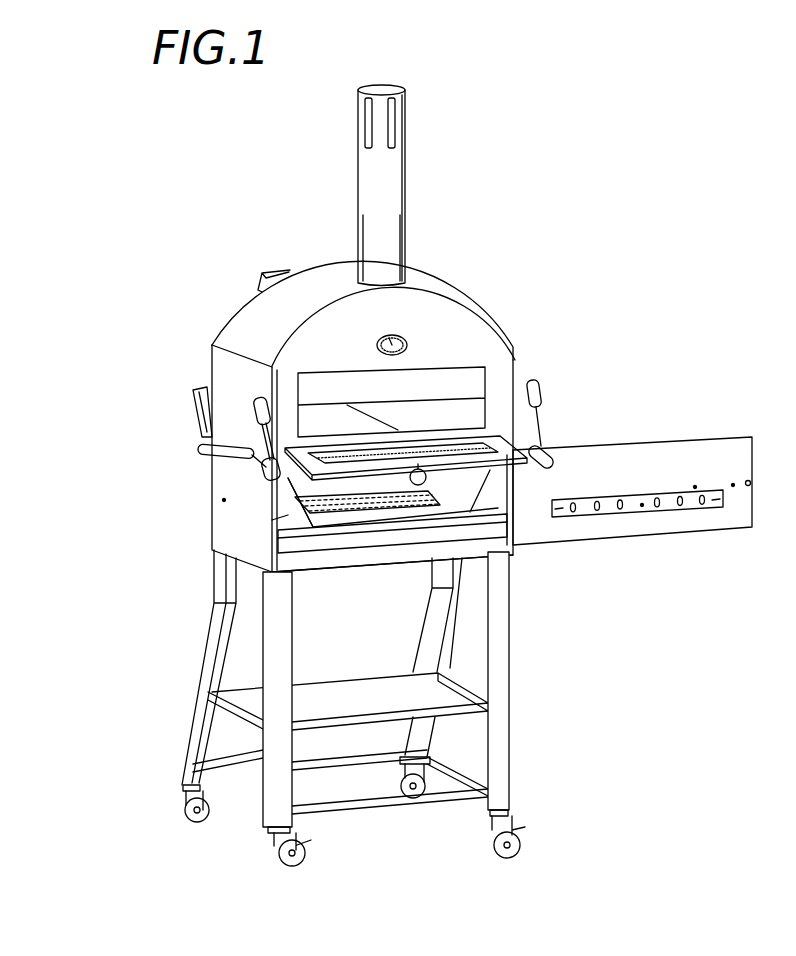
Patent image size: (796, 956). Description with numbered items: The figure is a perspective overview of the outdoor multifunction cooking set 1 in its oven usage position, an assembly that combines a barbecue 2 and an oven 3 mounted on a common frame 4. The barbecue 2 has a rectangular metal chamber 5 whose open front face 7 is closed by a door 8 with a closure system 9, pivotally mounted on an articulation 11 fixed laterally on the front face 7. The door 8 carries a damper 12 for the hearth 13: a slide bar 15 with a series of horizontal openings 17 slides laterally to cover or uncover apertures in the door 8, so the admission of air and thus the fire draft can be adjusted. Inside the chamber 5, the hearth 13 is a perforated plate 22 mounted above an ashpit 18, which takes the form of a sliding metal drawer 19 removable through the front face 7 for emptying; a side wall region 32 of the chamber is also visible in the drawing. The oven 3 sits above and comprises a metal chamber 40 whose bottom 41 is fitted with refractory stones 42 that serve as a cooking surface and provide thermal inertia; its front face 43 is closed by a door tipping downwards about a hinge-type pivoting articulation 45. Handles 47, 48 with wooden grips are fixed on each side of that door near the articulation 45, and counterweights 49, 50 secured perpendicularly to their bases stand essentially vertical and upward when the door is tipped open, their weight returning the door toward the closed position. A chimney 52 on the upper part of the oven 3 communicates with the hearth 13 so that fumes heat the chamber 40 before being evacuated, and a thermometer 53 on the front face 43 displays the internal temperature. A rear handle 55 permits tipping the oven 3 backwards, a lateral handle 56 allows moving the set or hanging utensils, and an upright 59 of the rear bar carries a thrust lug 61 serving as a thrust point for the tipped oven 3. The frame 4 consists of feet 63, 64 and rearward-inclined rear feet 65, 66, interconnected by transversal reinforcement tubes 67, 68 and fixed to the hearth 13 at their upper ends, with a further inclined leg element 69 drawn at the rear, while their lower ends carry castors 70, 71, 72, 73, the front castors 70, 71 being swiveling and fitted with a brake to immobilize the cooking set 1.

The multifunction cooking set 1 is at (542, 152).
The barbecue 2 is at (197, 492).
The oven 3 is at (512, 297).
The frame 4 is at (557, 652).
The chamber 5 is at (232, 521).
The front face 7 is at (490, 503).
The door 8 is at (650, 455).
The closure system 9 is at (752, 483).
The articulation 11 is at (517, 500).
The damper 12 is at (720, 515).
The hearth 13 is at (263, 523).
The slide bar 15 is at (635, 507).
The horizontal openings 17 is at (600, 500).
The ashpit 18 is at (420, 545).
The metal drawer 19 is at (392, 530).
The perforated plate 22 is at (280, 517).
The side wall 32 is at (228, 478).
The metal chamber 40 is at (220, 355).
The bottom 41 is at (442, 413).
The refractory stones 42 is at (403, 453).
The front face 43 is at (440, 320).
The pivoting articulation 45 is at (273, 362).
The handle 47 is at (250, 415).
The handle 48 is at (545, 440).
The counterweight 49 is at (256, 405).
The counterweight 50 is at (540, 390).
The chimney 52 is at (392, 175).
The thermometer 53 is at (378, 343).
The rear handle 55 is at (272, 270).
The lateral handle 56 is at (206, 448).
The upright 59 is at (197, 403).
The thrust lug 61 is at (205, 385).
The vertical foot 63 is at (277, 755).
The vertical foot 64 is at (502, 760).
The rear foot 65 is at (205, 712).
The rear foot 66 is at (430, 700).
The transversal reinforcement tube 67 is at (380, 800).
The transversal reinforcement tube 68 is at (327, 765).
The inclined leg 69 is at (437, 645).
The front castor 70 is at (275, 858).
The front castor 71 is at (517, 838).
The castor 72 is at (187, 820).
The castor 73 is at (423, 807).